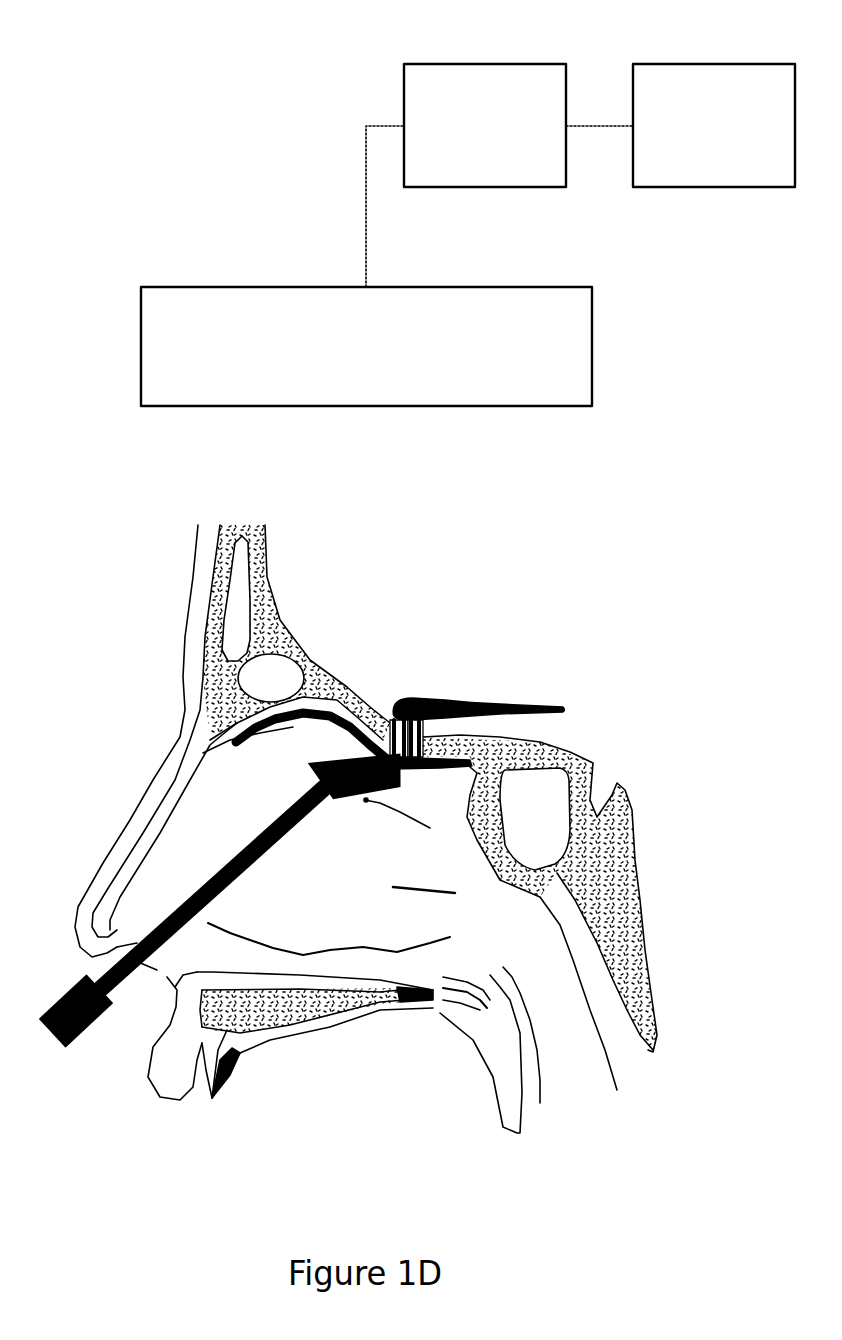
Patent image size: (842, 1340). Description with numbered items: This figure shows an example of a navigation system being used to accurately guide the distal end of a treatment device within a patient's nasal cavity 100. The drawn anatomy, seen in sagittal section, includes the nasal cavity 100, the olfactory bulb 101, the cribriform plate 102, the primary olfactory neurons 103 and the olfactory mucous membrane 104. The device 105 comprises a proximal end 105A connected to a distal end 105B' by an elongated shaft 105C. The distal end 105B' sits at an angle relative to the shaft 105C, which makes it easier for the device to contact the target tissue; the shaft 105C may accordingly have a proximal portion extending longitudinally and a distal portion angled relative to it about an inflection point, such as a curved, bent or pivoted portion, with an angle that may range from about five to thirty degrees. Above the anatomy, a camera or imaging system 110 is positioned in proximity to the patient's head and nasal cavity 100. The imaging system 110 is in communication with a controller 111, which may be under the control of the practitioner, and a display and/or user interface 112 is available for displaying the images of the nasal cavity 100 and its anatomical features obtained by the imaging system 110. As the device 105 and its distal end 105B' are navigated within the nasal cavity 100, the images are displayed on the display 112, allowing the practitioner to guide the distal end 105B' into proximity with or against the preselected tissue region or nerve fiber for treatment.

The nasal cavity 100 is at (322, 883).
The olfactory bulb 101 is at (420, 700).
The cribriform plate 102 is at (382, 733).
The primary olfactory neurons 103 is at (423, 737).
The olfactory mucous membrane 104 is at (412, 763).
The device 105 is at (208, 892).
The proximal end 105A is at (60, 993).
The distal end 105B' is at (328, 764).
The elongated shaft 105C is at (257, 828).
The imaging system 110 is at (168, 287).
The controller 111 is at (424, 66).
The display and/or user interface 112 is at (654, 66).